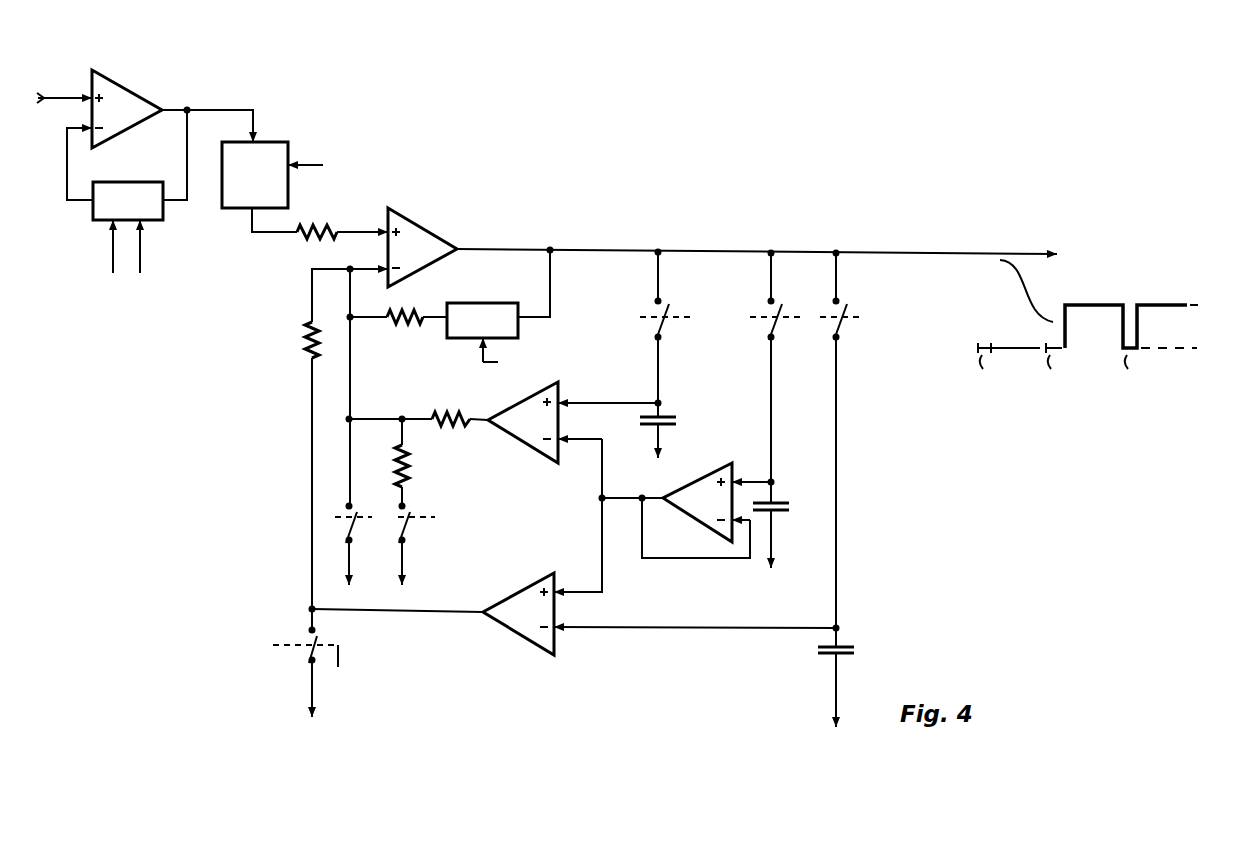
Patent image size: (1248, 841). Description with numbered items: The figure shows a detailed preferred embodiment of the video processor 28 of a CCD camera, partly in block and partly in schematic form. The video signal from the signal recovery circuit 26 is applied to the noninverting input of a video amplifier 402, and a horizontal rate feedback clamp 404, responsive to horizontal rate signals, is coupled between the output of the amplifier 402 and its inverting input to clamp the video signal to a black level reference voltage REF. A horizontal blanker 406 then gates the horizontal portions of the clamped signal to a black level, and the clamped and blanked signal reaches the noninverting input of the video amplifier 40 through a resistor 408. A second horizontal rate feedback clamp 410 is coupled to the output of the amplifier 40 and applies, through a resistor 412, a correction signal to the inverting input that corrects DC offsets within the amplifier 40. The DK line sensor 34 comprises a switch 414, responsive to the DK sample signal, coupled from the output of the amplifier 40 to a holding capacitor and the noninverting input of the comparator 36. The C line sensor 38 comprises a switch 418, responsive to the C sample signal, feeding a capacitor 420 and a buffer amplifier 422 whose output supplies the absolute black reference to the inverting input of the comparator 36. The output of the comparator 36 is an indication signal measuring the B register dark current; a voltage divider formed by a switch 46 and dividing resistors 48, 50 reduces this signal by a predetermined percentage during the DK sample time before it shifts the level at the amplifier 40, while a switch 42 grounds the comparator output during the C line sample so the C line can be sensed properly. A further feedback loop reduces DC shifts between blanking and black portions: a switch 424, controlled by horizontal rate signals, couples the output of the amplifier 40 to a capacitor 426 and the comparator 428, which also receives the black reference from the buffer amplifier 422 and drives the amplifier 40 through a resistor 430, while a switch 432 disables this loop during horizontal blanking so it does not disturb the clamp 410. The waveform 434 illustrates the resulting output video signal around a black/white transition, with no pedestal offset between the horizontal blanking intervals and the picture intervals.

The signal recovery circuit 26 is at (64, 74).
The video amplifier 402 is at (130, 93).
The horizontal rate feedback clamp 404 is at (130, 182).
The horizontal blanker 406 is at (270, 142).
The resistor 408 is at (310, 225).
The video amplifier 40 is at (418, 230).
The video processor 28 is at (615, 204).
The horizontal rate feedback clamp 410 is at (512, 303).
The resistor 412 is at (417, 323).
The resistor 430 is at (305, 341).
The switch 432 is at (306, 660).
The switch 42 is at (352, 537).
The switch 46 is at (405, 537).
The dividing resistor 48 is at (440, 419).
The dividing resistor 50 is at (408, 465).
The comparator 36 is at (527, 440).
The DK line sensor 34 is at (606, 364).
The C line sensor 38 is at (741, 416).
The switch 414 is at (661, 334).
The switch 418 is at (774, 334).
The capacitor 420 is at (785, 501).
The buffer amplifier 422 is at (719, 469).
The switch 424 is at (842, 333).
The capacitor 426 is at (840, 647).
The comparator 428 is at (540, 579).
The waveform 434 is at (1083, 305).